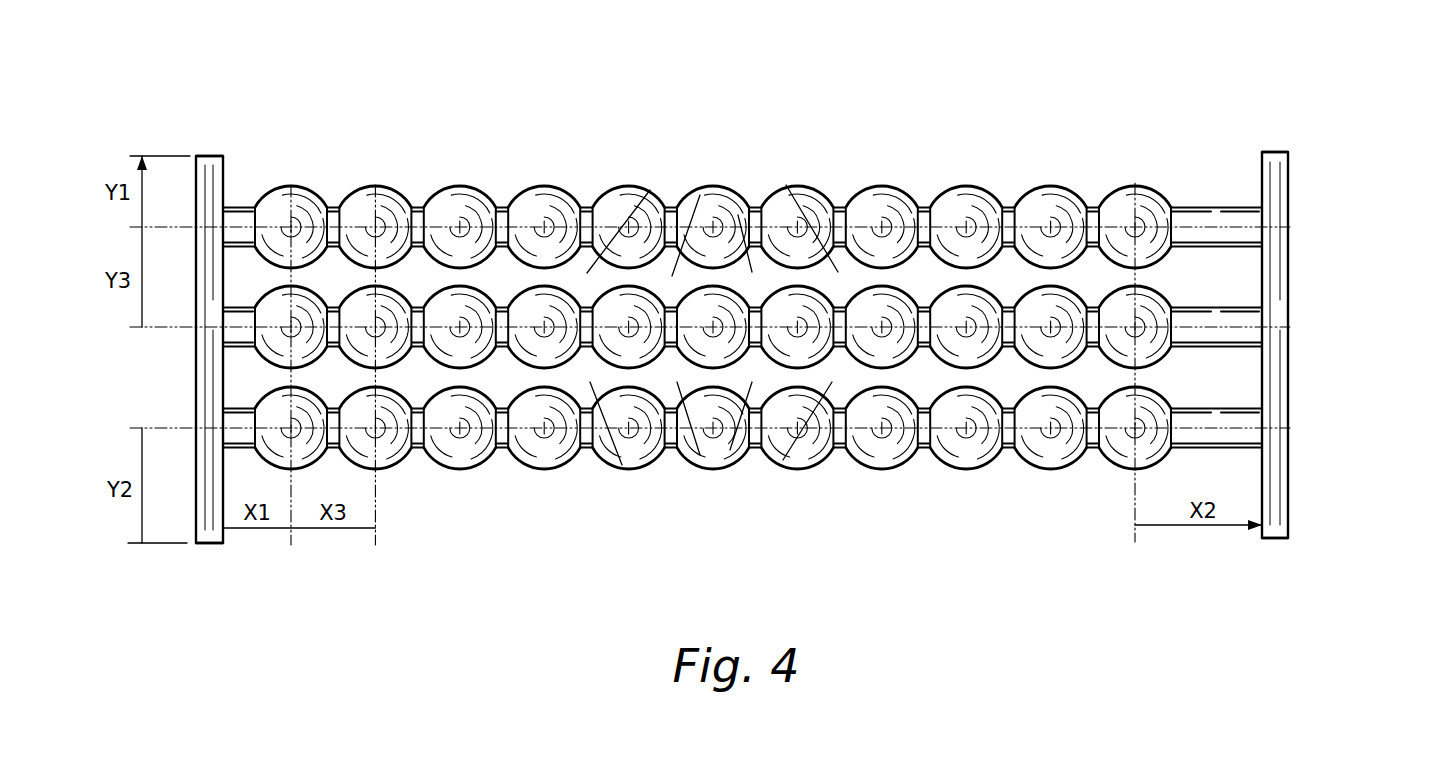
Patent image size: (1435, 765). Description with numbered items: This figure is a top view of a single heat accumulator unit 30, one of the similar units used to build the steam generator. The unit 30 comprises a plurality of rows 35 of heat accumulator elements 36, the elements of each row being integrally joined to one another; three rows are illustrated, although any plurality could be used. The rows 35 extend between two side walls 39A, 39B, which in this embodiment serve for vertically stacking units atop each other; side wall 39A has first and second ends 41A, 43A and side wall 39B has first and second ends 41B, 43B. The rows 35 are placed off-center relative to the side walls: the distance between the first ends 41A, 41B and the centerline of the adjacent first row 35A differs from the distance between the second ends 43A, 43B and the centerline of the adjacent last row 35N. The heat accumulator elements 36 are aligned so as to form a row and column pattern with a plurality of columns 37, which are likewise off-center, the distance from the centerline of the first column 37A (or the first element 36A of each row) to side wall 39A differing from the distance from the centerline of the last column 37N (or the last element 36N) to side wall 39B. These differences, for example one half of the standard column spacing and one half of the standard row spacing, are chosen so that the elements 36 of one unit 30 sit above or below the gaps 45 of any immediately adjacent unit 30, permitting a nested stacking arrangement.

The heat accumulator unit 30 is at (819, 276).
The first row 35A is at (817, 152).
The rows of heat accumulator elements 35 is at (1305, 322).
The last row 35N is at (1305, 430).
The first element 36A is at (300, 200).
The heat accumulator elements 36 is at (1043, 203).
The last element 36N is at (1120, 200).
The first column 37A is at (291, 157).
The columns 37 is at (380, 175).
The last column 37N is at (1149, 152).
The side wall 39A is at (169, 353).
The side wall 39B is at (1330, 349).
The first end of side wall 41A is at (207, 155).
The first end of side wall 41B is at (1275, 152).
The second end of side wall 43A is at (208, 545).
The second end of side wall 43B is at (1278, 540).
The gaps 45 is at (650, 190).